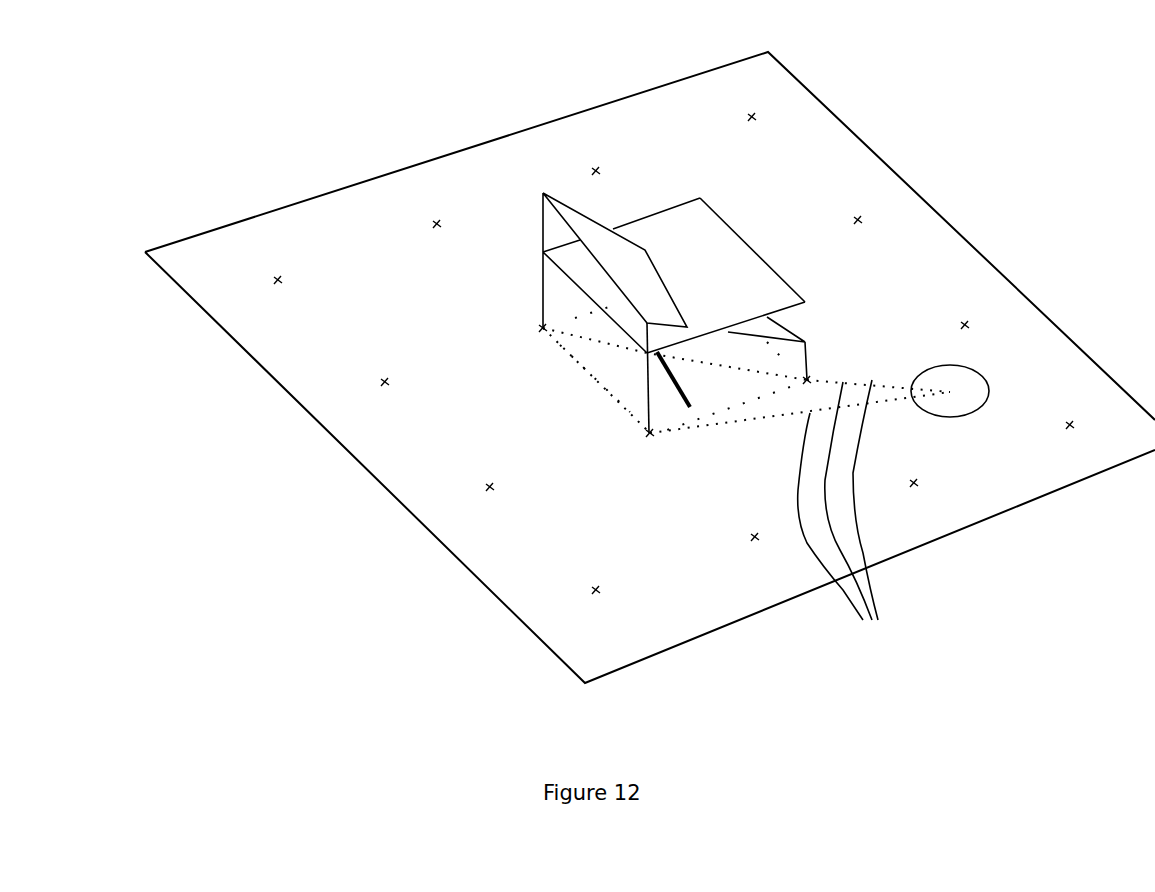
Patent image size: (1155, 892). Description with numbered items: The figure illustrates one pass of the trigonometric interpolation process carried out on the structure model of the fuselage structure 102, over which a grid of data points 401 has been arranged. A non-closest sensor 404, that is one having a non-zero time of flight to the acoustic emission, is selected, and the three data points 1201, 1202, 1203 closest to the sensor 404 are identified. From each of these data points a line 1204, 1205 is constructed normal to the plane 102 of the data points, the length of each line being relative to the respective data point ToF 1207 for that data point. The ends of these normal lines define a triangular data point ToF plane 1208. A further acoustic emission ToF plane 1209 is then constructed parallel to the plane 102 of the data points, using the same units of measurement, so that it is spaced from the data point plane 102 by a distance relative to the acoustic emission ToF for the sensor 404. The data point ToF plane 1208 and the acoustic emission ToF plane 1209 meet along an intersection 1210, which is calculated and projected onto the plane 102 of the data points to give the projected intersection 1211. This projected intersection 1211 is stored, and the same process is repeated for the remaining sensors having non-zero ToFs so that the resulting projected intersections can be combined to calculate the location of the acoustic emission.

The fuselage structure 102 is at (397, 168).
The data point 401 is at (385, 382).
The sensor location 404 is at (970, 418).
The closest data point 1201 is at (808, 380).
The closest data point 1202 is at (648, 433).
The closest data point 1203 is at (543, 328).
The line 1204 is at (808, 358).
The line 1205 is at (647, 388).
The data point ToF 1207 is at (850, 514).
The data point ToF plane 1208 is at (542, 290).
The acoustic emission ToF plane 1209 is at (753, 248).
The intersection 1210 is at (663, 280).
The projected intersection 1211 is at (677, 380).